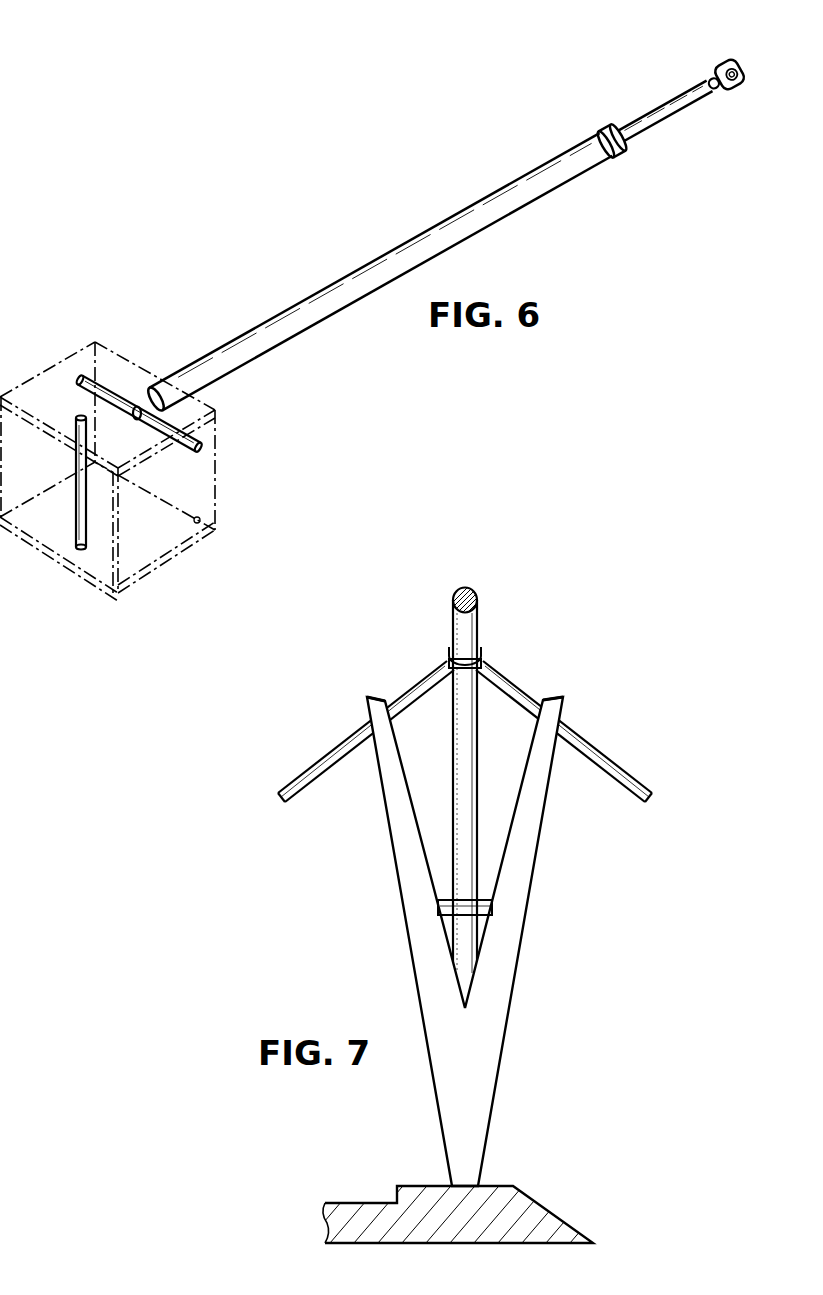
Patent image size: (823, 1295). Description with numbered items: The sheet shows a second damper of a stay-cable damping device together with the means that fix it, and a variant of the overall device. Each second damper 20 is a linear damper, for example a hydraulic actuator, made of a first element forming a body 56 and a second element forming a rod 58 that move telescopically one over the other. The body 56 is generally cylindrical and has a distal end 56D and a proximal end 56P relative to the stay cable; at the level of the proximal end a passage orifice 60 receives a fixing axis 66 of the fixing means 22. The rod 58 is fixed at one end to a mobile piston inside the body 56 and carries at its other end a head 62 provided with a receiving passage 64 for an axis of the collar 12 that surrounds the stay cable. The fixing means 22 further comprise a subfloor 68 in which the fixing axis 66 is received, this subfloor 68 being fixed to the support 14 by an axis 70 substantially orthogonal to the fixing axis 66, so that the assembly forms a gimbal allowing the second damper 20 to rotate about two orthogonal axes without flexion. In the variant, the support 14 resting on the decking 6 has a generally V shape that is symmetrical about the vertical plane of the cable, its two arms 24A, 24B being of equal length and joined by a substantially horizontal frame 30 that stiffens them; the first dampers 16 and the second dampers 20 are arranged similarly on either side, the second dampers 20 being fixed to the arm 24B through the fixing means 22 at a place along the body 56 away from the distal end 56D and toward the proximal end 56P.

In FIG. 7, the ground/base surface 6 is at (553, 1213).
In FIG. 7, the collar 12 is at (481, 652).
In FIG. 7, the support 14 is at (464, 941).
In FIG. 7, the first dampers 16 is at (637, 747).
In FIG. 6, the second dampers 20 is at (438, 220).
In FIG. 7, the second dampers 20 is at (292, 747).
In FIG. 6, the fixing means of the second dampers 22 is at (205, 577).
In FIG. 7, the arm 24A is at (538, 853).
In FIG. 7, the arm 24B is at (390, 853).
In FIG. 7, the frame 30 is at (480, 908).
In FIG. 6, the first element (body) 56 is at (352, 275).
In FIG. 6, the distal end 56D is at (158, 388).
In FIG. 6, the proximal end 56P is at (604, 130).
In FIG. 6, the second element (rod) 58 is at (645, 113).
In FIG. 6, the passage orifice 60 is at (135, 408).
In FIG. 6, the head 62 is at (720, 66).
In FIG. 6, the receiving passage 64 is at (737, 90).
In FIG. 6, the fixing axis 66 is at (88, 378).
In FIG. 6, the subfloor 68 is at (148, 555).
In FIG. 6, the axis 70 is at (80, 537).